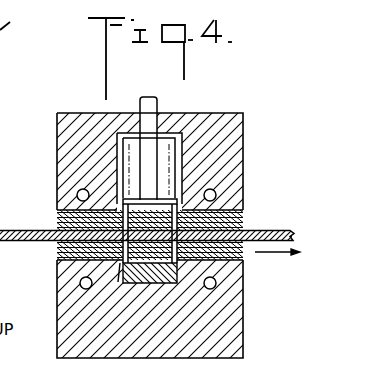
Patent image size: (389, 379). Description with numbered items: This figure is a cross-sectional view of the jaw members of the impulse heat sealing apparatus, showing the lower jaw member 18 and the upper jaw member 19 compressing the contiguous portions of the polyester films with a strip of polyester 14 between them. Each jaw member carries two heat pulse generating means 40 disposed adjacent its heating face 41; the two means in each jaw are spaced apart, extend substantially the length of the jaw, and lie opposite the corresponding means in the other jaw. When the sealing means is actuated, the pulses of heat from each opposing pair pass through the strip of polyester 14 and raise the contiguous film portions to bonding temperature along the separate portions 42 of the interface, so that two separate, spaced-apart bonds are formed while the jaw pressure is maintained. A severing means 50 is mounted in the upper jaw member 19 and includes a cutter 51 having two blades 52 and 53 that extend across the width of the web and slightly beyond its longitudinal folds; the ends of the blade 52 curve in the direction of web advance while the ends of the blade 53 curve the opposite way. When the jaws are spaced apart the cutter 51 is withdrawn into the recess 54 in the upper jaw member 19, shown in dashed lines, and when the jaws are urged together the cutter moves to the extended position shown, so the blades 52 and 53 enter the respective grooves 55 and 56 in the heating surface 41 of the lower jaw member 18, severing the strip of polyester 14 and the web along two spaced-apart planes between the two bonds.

The strip of polyester 14 is at (251, 261).
The lower jaw member 18 is at (58, 308).
The upper jaw member 19 is at (243, 130).
The heat pulse generating means 40 is at (77, 195).
The heating face 41 is at (57, 253).
The portions of the interface 42 is at (243, 215).
The severing means 50 is at (133, 122).
The cutter 51 is at (126, 200).
The blade 52 is at (181, 198).
The blade 53 is at (130, 206).
The recess 54 is at (200, 127).
The groove 55 is at (177, 283).
The groove 56 is at (118, 282).